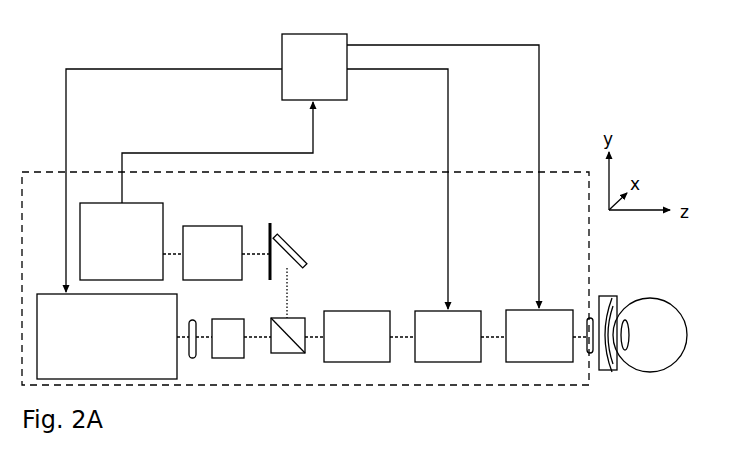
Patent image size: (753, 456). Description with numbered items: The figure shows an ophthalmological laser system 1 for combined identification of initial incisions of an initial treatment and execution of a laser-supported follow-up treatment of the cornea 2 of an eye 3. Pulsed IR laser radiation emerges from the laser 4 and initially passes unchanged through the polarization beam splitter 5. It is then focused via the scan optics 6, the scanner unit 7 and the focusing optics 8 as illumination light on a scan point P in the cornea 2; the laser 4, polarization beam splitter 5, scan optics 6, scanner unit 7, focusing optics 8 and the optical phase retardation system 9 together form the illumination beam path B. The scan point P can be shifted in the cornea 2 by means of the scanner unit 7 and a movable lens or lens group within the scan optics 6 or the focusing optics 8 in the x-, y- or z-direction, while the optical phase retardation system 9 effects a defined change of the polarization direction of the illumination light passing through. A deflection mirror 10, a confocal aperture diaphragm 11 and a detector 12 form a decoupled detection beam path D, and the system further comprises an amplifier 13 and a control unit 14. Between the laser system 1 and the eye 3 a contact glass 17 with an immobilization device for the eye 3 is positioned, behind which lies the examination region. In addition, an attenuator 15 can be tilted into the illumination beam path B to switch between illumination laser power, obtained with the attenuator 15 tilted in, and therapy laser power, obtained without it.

The ophthalmological laser system 1 is at (305, 205).
The control unit 14 is at (302, 171).
The amplifier 13 is at (196, 191).
The detector 12 is at (226, 253).
The laser 4 is at (113, 336).
The confocal aperture diaphragm 11 is at (270, 225).
The deflection mirror 10 is at (300, 250).
The illumination beam path B is at (188, 358).
The attenuator 15 is at (197, 352).
The detection beam path D is at (287, 293).
The polarization beam splitter 5 is at (283, 353).
The scan optics 6 is at (369, 336).
The scanner unit 7 is at (460, 336).
The focusing optics 8 is at (546, 336).
The optical phase retardation system 9 is at (586, 342).
The contact glass 17 is at (615, 300).
The cornea 2 is at (617, 316).
The scan point P is at (620, 362).
The eye 3 is at (668, 362).